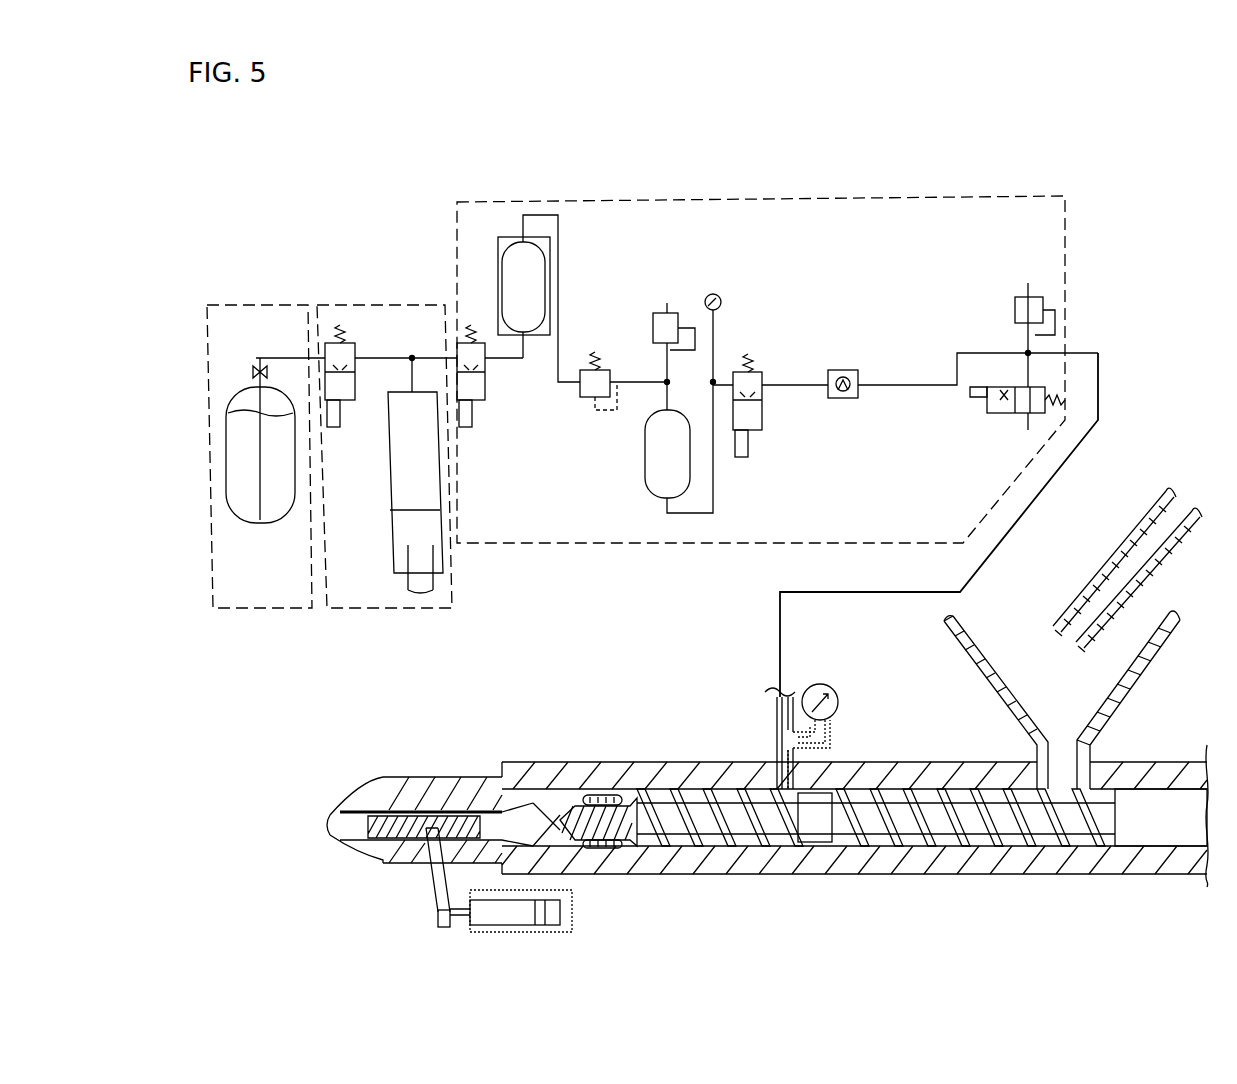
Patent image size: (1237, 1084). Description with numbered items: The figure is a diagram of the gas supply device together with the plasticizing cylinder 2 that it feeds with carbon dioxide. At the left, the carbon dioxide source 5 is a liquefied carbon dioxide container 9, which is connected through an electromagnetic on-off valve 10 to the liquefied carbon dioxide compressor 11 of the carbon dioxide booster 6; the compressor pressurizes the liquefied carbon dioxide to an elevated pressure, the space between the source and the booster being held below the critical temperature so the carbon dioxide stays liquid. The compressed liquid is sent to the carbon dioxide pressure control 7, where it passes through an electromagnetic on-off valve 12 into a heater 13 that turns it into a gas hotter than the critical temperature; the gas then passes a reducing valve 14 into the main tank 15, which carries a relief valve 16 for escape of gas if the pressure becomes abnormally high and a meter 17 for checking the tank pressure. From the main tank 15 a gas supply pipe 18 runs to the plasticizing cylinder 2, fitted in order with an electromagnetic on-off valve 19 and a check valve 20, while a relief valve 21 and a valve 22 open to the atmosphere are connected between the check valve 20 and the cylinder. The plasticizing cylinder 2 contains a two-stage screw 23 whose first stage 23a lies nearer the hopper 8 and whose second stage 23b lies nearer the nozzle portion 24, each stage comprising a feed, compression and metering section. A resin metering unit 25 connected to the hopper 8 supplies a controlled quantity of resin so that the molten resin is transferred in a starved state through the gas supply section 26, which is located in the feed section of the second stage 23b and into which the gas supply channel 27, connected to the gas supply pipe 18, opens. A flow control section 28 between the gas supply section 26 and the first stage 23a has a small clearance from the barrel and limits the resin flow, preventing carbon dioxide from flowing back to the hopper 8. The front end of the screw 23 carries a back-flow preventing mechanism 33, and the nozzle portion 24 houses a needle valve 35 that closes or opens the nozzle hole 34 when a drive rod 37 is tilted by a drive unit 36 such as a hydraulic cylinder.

The plasticizing cylinder 2 is at (984, 885).
The carbon dioxide source 5 is at (268, 297).
The carbon dioxide booster 6 is at (363, 297).
The carbon dioxide pressure control 7 is at (581, 555).
The hopper 8 is at (1160, 660).
The liquefied carbon dioxide container 9 is at (270, 522).
The electromagnetic on-off valve 10 is at (342, 420).
The liquefied carbon dioxide compressor 11 is at (398, 492).
The electromagnetic on-off valve 12 is at (485, 422).
The heater 13 is at (510, 239).
The reducing valve 14 is at (593, 405).
The main tank 15 is at (646, 485).
The relief valve 16 is at (652, 317).
The meter 17 is at (721, 301).
The gas supply pipe 18 is at (1080, 456).
The electromagnetic on-off valve 19 is at (750, 446).
The check valve 20 is at (843, 399).
The relief valve 21 is at (1012, 305).
The valve open to the atmosphere 22 is at (992, 413).
The screw 23 is at (922, 821).
The first stage of the screw 23a is at (905, 838).
The second stage of the screw 23b is at (670, 835).
The nozzle portion 24 is at (362, 798).
The resin metering unit 25 is at (1170, 560).
The gas supply section 26 is at (777, 840).
The gas supply channel 27 is at (776, 727).
The flow control section 28 is at (818, 832).
The back-flow preventing mechanism 33 is at (602, 793).
The nozzle hole 34 is at (328, 824).
The needle valve 35 is at (365, 849).
The drive unit 36 is at (578, 917).
The drive rod 37 is at (428, 893).